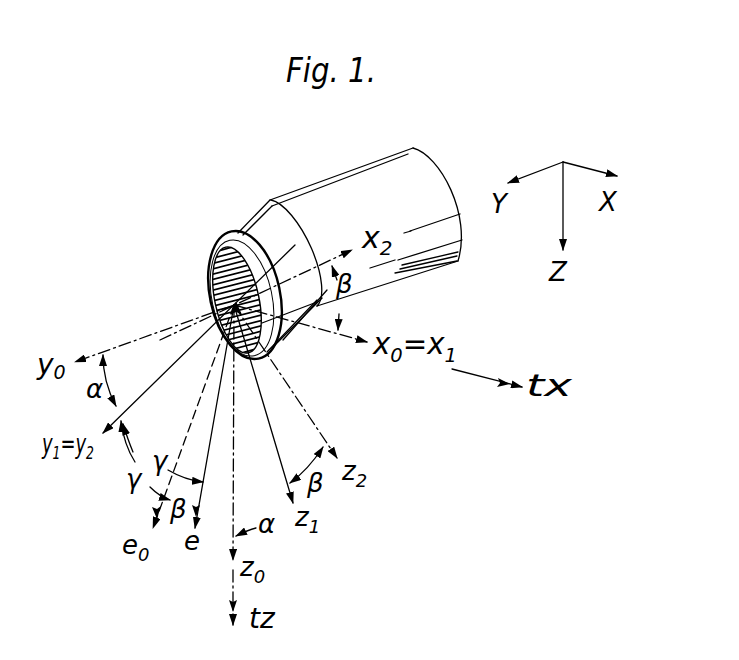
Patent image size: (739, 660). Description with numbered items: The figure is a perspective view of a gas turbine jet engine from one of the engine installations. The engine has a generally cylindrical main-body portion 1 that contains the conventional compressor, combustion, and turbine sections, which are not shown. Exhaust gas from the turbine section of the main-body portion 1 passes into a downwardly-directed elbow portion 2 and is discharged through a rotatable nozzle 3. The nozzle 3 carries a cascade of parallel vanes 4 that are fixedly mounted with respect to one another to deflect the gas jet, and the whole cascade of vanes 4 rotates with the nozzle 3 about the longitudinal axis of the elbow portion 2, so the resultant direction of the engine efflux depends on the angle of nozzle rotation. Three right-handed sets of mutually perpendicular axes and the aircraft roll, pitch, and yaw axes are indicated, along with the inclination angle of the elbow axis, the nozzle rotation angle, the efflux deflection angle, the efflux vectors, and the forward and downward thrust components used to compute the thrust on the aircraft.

The main-body portion 1 is at (343, 186).
The elbow portion 2 is at (256, 216).
The rotatable nozzle 3 is at (233, 233).
The cascade of parallel vanes 4 is at (216, 270).